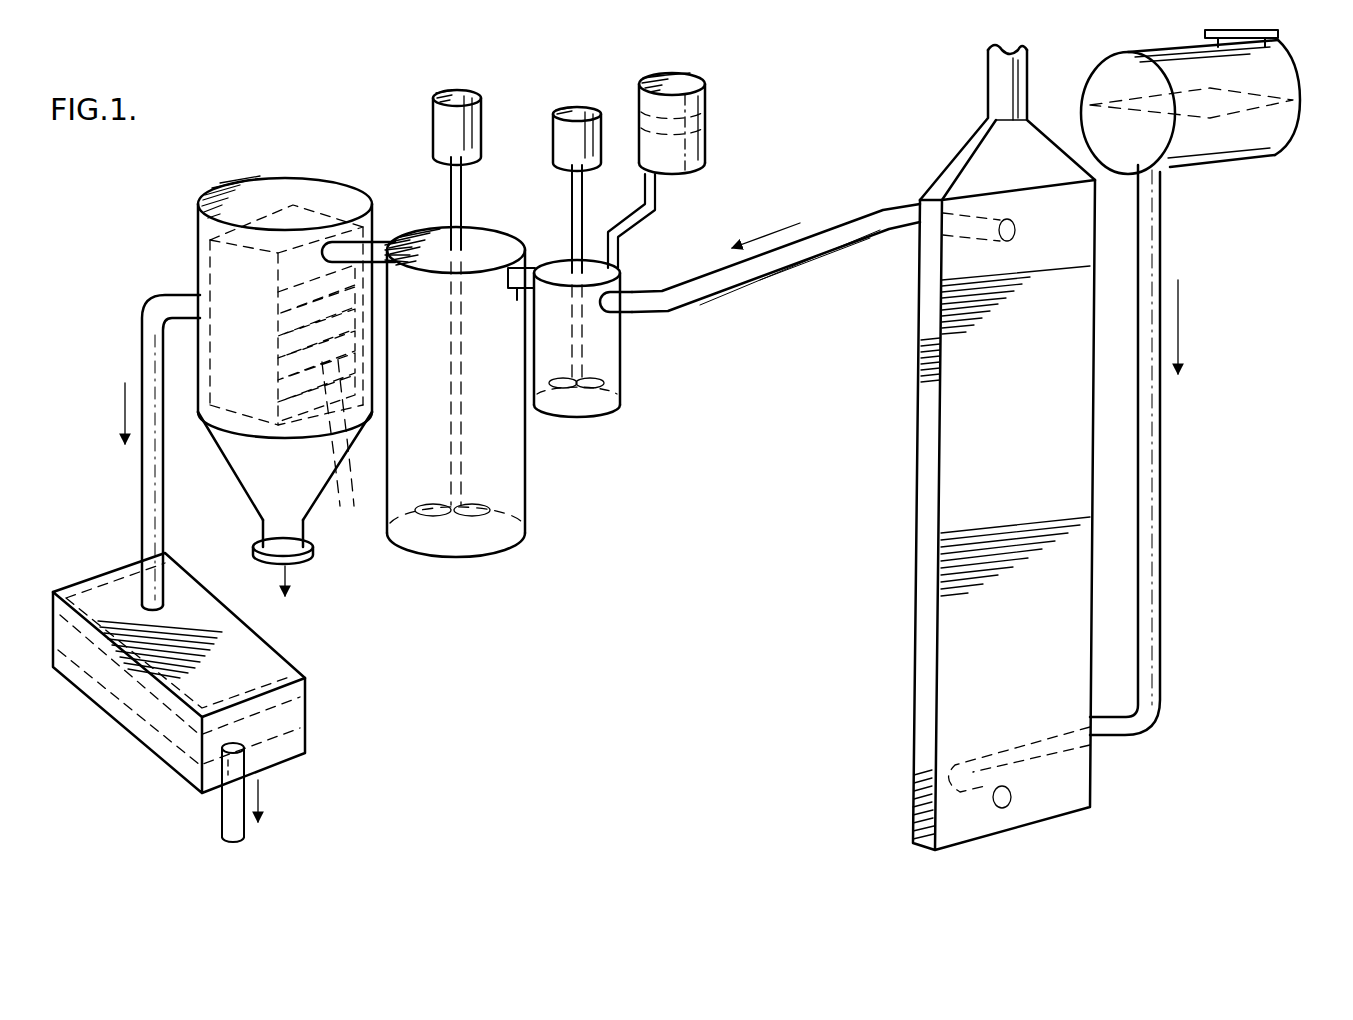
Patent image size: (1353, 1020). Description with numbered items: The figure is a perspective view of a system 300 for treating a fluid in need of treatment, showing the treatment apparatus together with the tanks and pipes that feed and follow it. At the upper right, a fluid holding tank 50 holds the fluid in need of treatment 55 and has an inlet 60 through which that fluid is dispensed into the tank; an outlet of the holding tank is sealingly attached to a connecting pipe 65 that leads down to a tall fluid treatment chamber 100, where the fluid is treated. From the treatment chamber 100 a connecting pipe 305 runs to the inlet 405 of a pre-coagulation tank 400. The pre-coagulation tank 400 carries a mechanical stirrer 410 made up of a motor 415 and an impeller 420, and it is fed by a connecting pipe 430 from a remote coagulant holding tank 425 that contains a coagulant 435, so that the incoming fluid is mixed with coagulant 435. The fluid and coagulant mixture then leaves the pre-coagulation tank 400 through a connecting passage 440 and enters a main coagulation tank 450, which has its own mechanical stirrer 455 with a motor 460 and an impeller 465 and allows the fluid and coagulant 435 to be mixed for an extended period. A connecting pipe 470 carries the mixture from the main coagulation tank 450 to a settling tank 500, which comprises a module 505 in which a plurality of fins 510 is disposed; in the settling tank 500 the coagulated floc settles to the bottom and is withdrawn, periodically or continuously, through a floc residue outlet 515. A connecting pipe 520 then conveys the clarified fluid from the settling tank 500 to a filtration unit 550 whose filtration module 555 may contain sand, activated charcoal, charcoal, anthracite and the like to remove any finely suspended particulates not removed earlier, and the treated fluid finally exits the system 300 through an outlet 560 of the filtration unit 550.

The fluid holding tank 50 is at (1245, 178).
The fluid in need of treatment 55 is at (1280, 130).
The inlet 60 is at (1210, 30).
The connecting pipe 65 is at (1160, 478).
The fluid treatment chamber 100 is at (957, 138).
The system 300 is at (353, 128).
The connecting pipe 305 is at (810, 265).
The pre-coagulation tank 400 is at (585, 432).
The inlet 405 is at (618, 322).
The mechanical stirrer 410 is at (572, 190).
The motor 415 is at (578, 107).
The impeller 420 is at (612, 392).
The coagulant holding tank 425 is at (690, 80).
The connecting pipe 430 is at (640, 224).
The coagulant 435 is at (705, 148).
The connecting passage 440 is at (532, 263).
The main coagulation tank 450 is at (470, 568).
The mechanical stirrer 455 is at (450, 183).
The motor 460 is at (455, 93).
The impeller 465 is at (520, 505).
The connecting pipe 470 is at (392, 240).
The settling tank 500 is at (232, 178).
The module 505 is at (215, 275).
The fins 510 is at (350, 451).
The floc residue outlet 515 is at (300, 556).
The connecting pipe 520 is at (140, 358).
The filtration unit 550 is at (115, 733).
The filtration module 555 is at (290, 662).
The outlet 560 is at (222, 812).